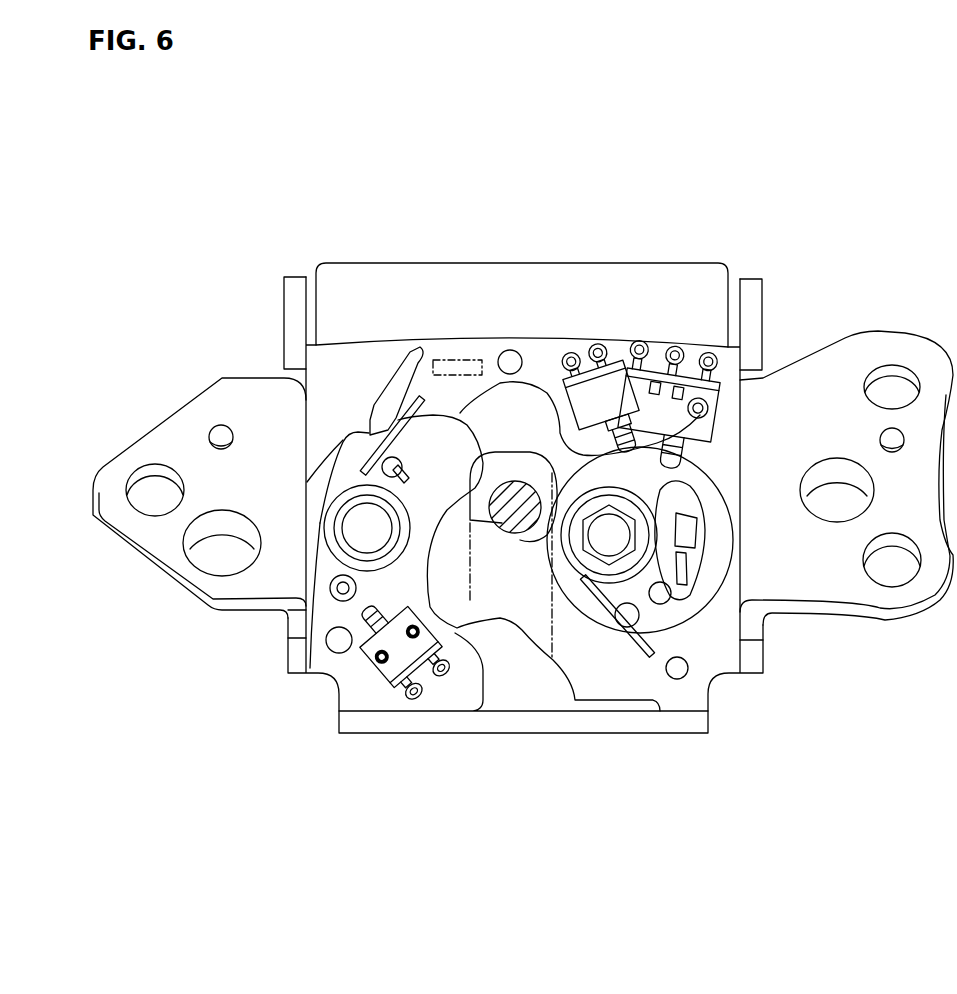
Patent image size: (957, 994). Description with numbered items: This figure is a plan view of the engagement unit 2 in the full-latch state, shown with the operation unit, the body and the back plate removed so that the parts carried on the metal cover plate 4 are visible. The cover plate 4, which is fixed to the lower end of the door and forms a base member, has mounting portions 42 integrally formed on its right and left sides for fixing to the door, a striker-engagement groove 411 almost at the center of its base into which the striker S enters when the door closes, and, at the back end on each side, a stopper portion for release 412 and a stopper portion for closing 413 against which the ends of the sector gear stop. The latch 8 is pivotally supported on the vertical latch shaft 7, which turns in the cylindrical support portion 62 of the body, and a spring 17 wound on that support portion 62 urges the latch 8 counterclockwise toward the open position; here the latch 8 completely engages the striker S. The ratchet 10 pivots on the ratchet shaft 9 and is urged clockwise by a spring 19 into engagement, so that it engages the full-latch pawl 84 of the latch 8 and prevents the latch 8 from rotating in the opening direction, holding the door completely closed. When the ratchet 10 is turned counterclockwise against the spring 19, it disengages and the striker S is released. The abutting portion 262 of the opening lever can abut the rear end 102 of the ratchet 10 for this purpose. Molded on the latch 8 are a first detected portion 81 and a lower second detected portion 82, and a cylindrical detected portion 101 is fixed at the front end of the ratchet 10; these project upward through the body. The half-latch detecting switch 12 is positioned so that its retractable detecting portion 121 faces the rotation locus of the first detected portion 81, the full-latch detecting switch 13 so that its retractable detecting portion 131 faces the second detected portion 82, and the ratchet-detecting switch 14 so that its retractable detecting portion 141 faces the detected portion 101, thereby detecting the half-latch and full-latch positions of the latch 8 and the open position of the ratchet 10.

The engagement unit 2 is at (280, 256).
The cover plate 4 is at (690, 737).
The mounting portions 42 is at (142, 568).
The striker-engagement groove 411 is at (482, 665).
The stopper portion for release 412 is at (284, 302).
The stopper portion for closing 413 is at (763, 303).
The latch shaft 7 is at (604, 542).
The latch 8 is at (690, 628).
The first detected portion 81 is at (700, 503).
The second detected portion 82 is at (742, 618).
The ratchet shaft 9 is at (365, 528).
The ratchet 10 is at (343, 473).
The detected portion 101 is at (316, 663).
The rear end 102 is at (390, 362).
The half-latch detecting switch 12 is at (592, 388).
The retractable detecting portion 121 is at (556, 452).
The full-latch detecting switch 13 is at (688, 385).
The retractable detecting portion 131 is at (672, 468).
The ratchet-detecting switch 14 is at (383, 678).
The retractable detecting portion 141 is at (357, 607).
The spring 17 is at (626, 572).
The spring 19 is at (350, 478).
The abutting portion 262 is at (445, 360).
The cylindrical support portion 62 is at (662, 604).
The full-latch pawl 84 is at (468, 417).
The striker S is at (513, 523).